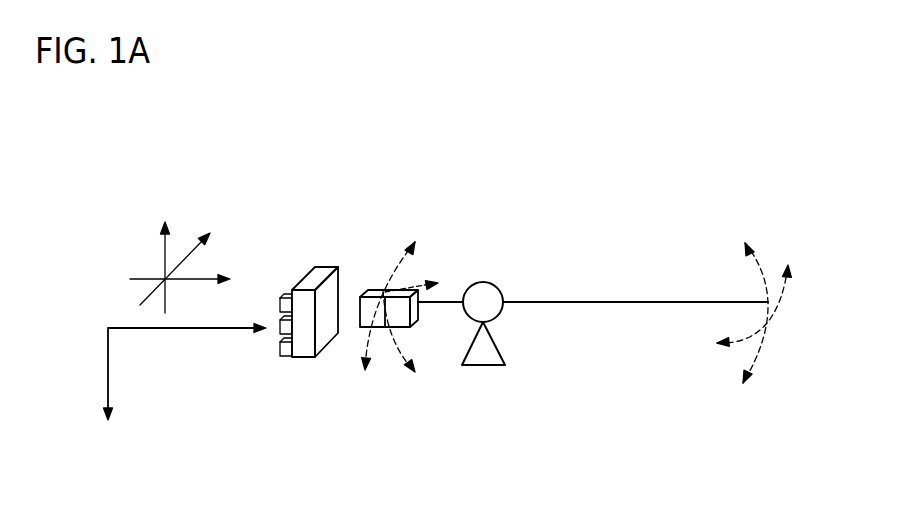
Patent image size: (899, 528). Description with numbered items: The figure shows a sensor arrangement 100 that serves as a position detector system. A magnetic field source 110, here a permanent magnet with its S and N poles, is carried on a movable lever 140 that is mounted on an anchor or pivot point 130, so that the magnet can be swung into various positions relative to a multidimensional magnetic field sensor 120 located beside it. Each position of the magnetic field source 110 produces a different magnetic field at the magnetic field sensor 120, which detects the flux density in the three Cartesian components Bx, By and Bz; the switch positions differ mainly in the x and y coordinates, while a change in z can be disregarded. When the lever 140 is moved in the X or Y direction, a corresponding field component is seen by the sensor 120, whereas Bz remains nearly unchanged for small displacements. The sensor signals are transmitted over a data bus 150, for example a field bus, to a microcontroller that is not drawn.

The sensor arrangement 100 is at (572, 196).
The magnetic field source 110 is at (395, 210).
The multidimensional magnetic field sensor 120 is at (322, 265).
The pivot point 130 is at (483, 367).
The movable lever 140 is at (623, 307).
The data bus 150 is at (108, 360).